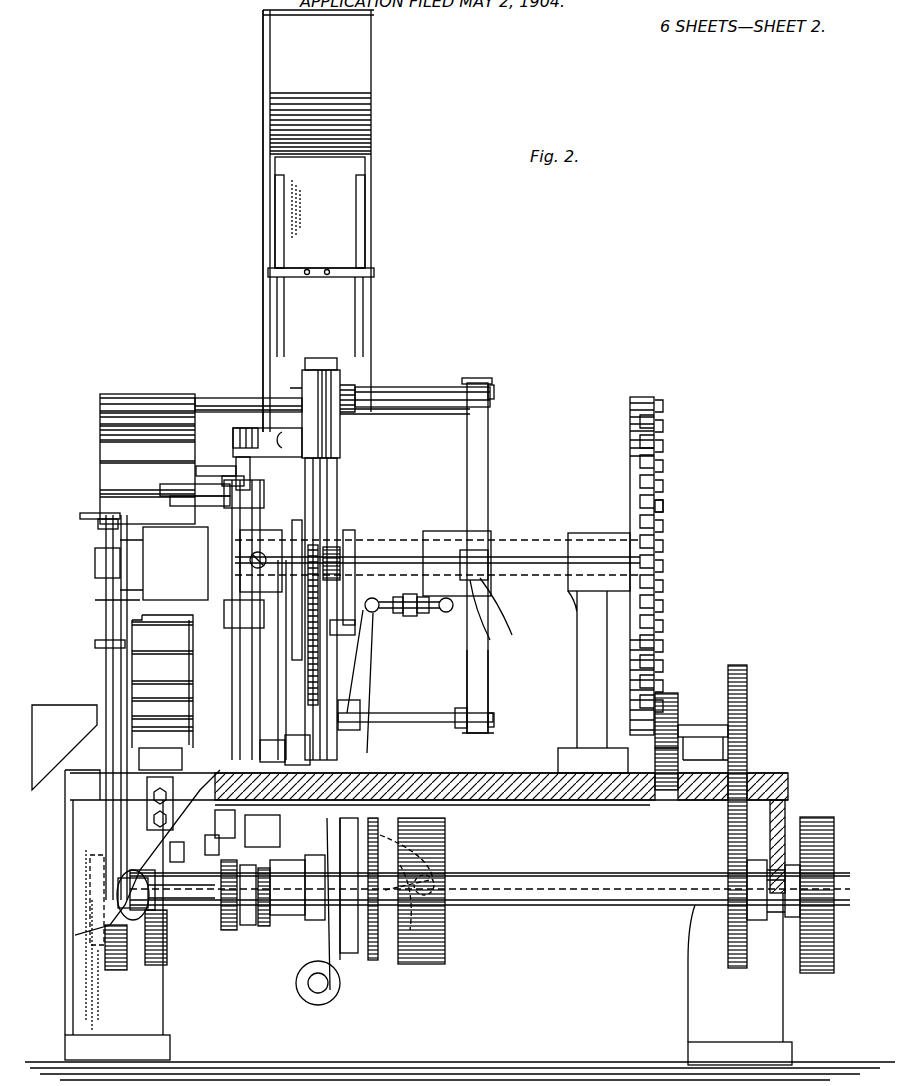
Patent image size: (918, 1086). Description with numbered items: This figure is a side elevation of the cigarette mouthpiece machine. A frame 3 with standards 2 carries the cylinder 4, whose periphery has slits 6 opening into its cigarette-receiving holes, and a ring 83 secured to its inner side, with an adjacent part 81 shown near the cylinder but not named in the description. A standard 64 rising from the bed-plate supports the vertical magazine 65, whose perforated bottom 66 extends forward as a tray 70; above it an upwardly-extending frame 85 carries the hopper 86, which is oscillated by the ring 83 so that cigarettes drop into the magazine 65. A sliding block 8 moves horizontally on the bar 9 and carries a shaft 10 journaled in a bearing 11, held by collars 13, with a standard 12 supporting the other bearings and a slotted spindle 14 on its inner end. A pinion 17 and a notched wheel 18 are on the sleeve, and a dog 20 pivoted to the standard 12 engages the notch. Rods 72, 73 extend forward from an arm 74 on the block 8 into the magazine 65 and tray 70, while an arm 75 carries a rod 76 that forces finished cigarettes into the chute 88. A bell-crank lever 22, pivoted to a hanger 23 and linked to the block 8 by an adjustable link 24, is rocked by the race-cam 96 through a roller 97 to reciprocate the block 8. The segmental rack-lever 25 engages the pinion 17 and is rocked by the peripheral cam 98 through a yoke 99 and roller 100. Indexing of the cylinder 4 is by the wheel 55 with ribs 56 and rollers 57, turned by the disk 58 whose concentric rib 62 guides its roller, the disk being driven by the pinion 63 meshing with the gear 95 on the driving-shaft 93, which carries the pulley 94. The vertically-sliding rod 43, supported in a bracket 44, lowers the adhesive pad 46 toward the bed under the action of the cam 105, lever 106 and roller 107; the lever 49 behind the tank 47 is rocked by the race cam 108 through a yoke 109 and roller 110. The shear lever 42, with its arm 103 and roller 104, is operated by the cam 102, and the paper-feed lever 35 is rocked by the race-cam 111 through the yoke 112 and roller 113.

The standards 2 is at (594, 653).
The frame 3 is at (510, 773).
The cylinder 4 is at (120, 455).
The slits 6 is at (100, 420).
The sliding block 8 is at (444, 531).
The horizontal bar 9 is at (534, 540).
The shaft 10 is at (388, 556).
The bearing 11 is at (480, 552).
The standard 12 is at (332, 680).
The collars 13 is at (495, 615).
The spindle 14 is at (284, 548).
The pinion 17 is at (298, 520).
The wheel 18 is at (349, 530).
The dog 20 is at (345, 560).
The bell-crank lever 22 is at (360, 745).
The hanger 23 is at (296, 960).
The adjustable pivotal link 24 is at (412, 615).
The segmental rack-lever 25 is at (308, 626).
The lever 35 is at (110, 688).
The operating-lever 42 is at (285, 747).
The vertically-sliding rod 43 is at (250, 500).
The fixed sleeve or bracket 44 is at (282, 678).
The pad 46 is at (160, 490).
The tank 47 is at (144, 556).
The lever 49 is at (125, 608).
The wheel 55 is at (634, 470).
The ribs 56 is at (656, 495).
The rollers 57 is at (664, 507).
The disk 58 is at (680, 695).
The concentric rib 62 is at (656, 748).
The pinion 63 is at (747, 700).
The standard 64 is at (337, 478).
The magazine 65 is at (321, 257).
The bottom 66 is at (342, 410).
The tray 70 is at (224, 398).
The rod 72 is at (396, 392).
The rod 73 is at (430, 412).
The arm 74 is at (480, 445).
The arm 75 is at (492, 678).
The rod 76 is at (424, 713).
The bracket 81 is at (233, 438).
The ring 83 is at (223, 473).
The frame 85 is at (270, 228).
The hopper 86 is at (318, 221).
The chute 88 is at (64, 747).
The driving-shaft 93 is at (584, 908).
The driving-pulley 94 is at (815, 817).
The gear 95 is at (728, 852).
The race-cam 96 is at (445, 862).
The roller 97 is at (440, 898).
The peripheral cam 98 is at (370, 962).
The yoke 99 is at (302, 1002).
The roller 100 is at (420, 790).
The peripheral cam 102 is at (264, 928).
The arm 103 is at (280, 840).
The roller 104 is at (260, 935).
The peripheral cam 105 is at (226, 930).
The lever 106 is at (205, 848).
The roller 107 is at (222, 860).
The race cam 108 is at (166, 968).
The yoke 109 is at (134, 970).
The roller 110 is at (130, 872).
The race-cam 111 is at (108, 968).
The yoke 112 is at (95, 888).
The roller 113 is at (75, 935).